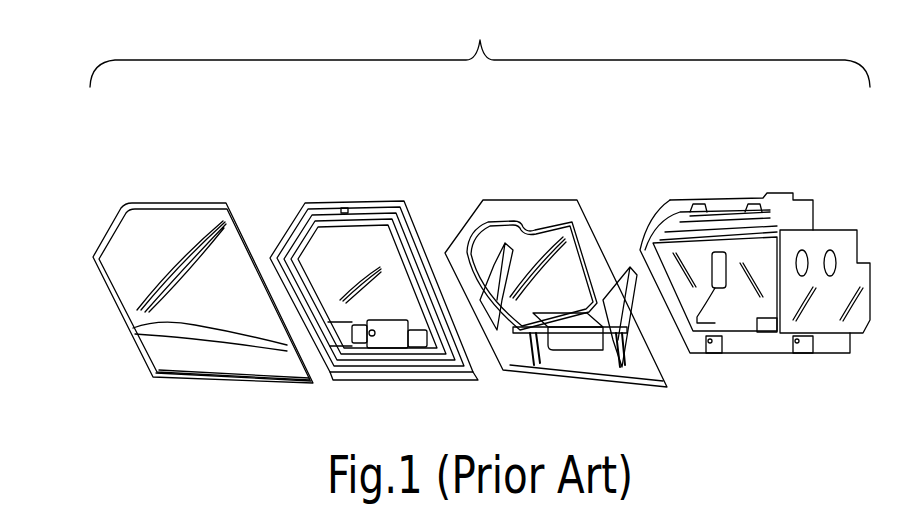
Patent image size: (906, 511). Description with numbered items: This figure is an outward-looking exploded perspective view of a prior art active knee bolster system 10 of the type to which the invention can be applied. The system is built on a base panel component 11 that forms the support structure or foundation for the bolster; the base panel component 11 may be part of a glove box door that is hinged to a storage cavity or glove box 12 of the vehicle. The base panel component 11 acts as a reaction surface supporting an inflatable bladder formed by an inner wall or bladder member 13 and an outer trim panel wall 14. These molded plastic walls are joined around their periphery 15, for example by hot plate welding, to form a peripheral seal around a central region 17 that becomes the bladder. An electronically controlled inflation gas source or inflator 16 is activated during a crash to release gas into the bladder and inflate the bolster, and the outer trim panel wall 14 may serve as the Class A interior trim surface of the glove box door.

The active knee bolster system 10 is at (480, 41).
The base panel component 11 is at (508, 194).
The glove box 12 is at (704, 195).
The inner wall (bladder member) 13 is at (321, 197).
The outer (trim panel) wall 14 is at (184, 195).
The periphery 15 is at (382, 201).
The inflation gas source (inflator) 16 is at (392, 342).
The central region 17 is at (376, 253).